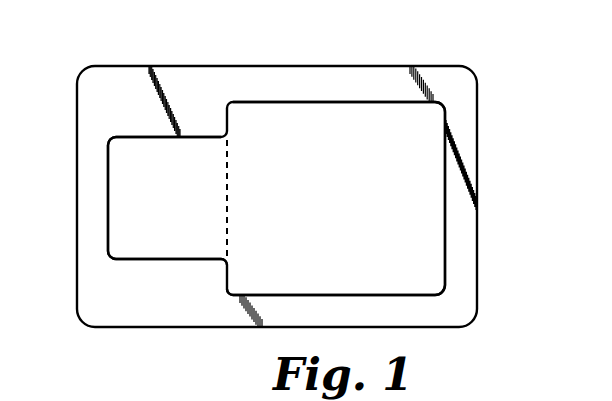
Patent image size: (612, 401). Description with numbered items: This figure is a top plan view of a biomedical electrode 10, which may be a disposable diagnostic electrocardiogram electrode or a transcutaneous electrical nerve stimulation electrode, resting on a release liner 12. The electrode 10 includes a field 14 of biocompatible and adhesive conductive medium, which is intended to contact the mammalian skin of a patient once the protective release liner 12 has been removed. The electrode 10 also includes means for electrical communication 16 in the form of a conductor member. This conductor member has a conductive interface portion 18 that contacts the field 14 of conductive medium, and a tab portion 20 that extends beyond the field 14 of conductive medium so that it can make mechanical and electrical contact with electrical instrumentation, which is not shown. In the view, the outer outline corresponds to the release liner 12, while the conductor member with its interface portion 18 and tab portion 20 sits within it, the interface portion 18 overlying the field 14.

The electrode 10 is at (372, 96).
The release liner 12 is at (462, 90).
The field of conductive medium 14 is at (228, 227).
The means for electrical communication 16 is at (433, 232).
The conductive interface portion 18 is at (242, 275).
The tab portion 20 is at (118, 205).